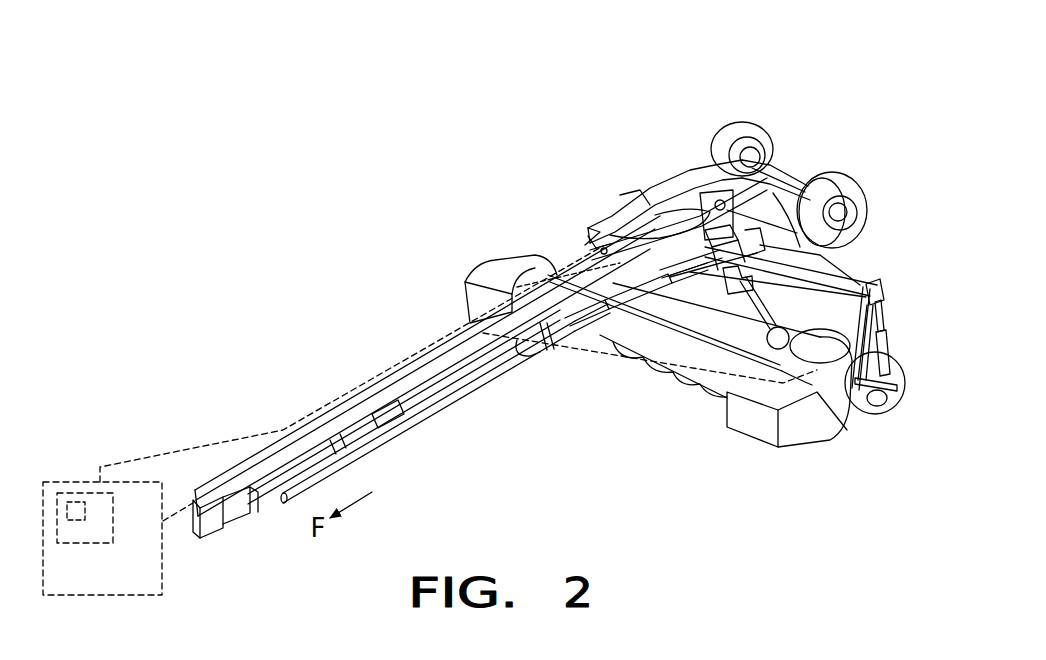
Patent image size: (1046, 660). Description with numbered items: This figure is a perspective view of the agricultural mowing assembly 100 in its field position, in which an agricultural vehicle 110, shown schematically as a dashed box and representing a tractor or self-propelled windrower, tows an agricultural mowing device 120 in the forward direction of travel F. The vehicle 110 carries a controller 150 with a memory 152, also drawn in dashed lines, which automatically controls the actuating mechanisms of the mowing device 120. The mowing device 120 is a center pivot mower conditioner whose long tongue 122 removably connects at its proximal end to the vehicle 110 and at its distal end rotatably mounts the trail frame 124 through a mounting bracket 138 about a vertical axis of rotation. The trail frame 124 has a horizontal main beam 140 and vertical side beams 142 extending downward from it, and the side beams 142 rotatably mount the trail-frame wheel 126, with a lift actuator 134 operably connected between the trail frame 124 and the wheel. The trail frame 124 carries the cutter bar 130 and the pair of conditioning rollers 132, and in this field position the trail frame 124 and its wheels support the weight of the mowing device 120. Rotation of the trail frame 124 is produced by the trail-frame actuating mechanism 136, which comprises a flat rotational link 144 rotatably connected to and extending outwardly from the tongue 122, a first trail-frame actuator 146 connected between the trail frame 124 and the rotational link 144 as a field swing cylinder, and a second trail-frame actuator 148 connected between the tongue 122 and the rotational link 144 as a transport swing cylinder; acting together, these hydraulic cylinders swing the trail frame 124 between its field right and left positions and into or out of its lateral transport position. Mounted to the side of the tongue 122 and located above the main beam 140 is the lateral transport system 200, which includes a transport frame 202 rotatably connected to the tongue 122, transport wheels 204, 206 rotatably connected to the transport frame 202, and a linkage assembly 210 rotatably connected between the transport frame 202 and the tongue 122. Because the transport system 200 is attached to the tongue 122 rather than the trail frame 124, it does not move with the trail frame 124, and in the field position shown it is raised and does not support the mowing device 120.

The agricultural mowing assembly 100 is at (128, 446).
The agricultural vehicle 110 is at (102, 597).
The agricultural mowing device 120 is at (445, 312).
The tongue 122 is at (410, 385).
The trail frame 124 is at (877, 272).
The trail-frame wheel 126 is at (883, 417).
The cutter bar 130 is at (668, 380).
The conditioning rollers 132 is at (805, 322).
The lift actuator 134 is at (887, 333).
The trail-frame actuating mechanism 136 is at (688, 302).
The mounting bracket 138 is at (727, 173).
The main beam 140 is at (853, 277).
The side beam 142 is at (885, 307).
The rotational link 144 is at (680, 290).
The first trail-frame actuator 146 is at (760, 280).
The second trail-frame actuator 148 is at (617, 303).
The controller 150 is at (113, 522).
The memory 152 is at (73, 509).
The lateral transport system 200 is at (690, 152).
The transport frame 202 is at (660, 165).
The transport wheel 204 is at (845, 178).
The transport wheel 206 is at (743, 122).
The linkage assembly 210 is at (585, 250).